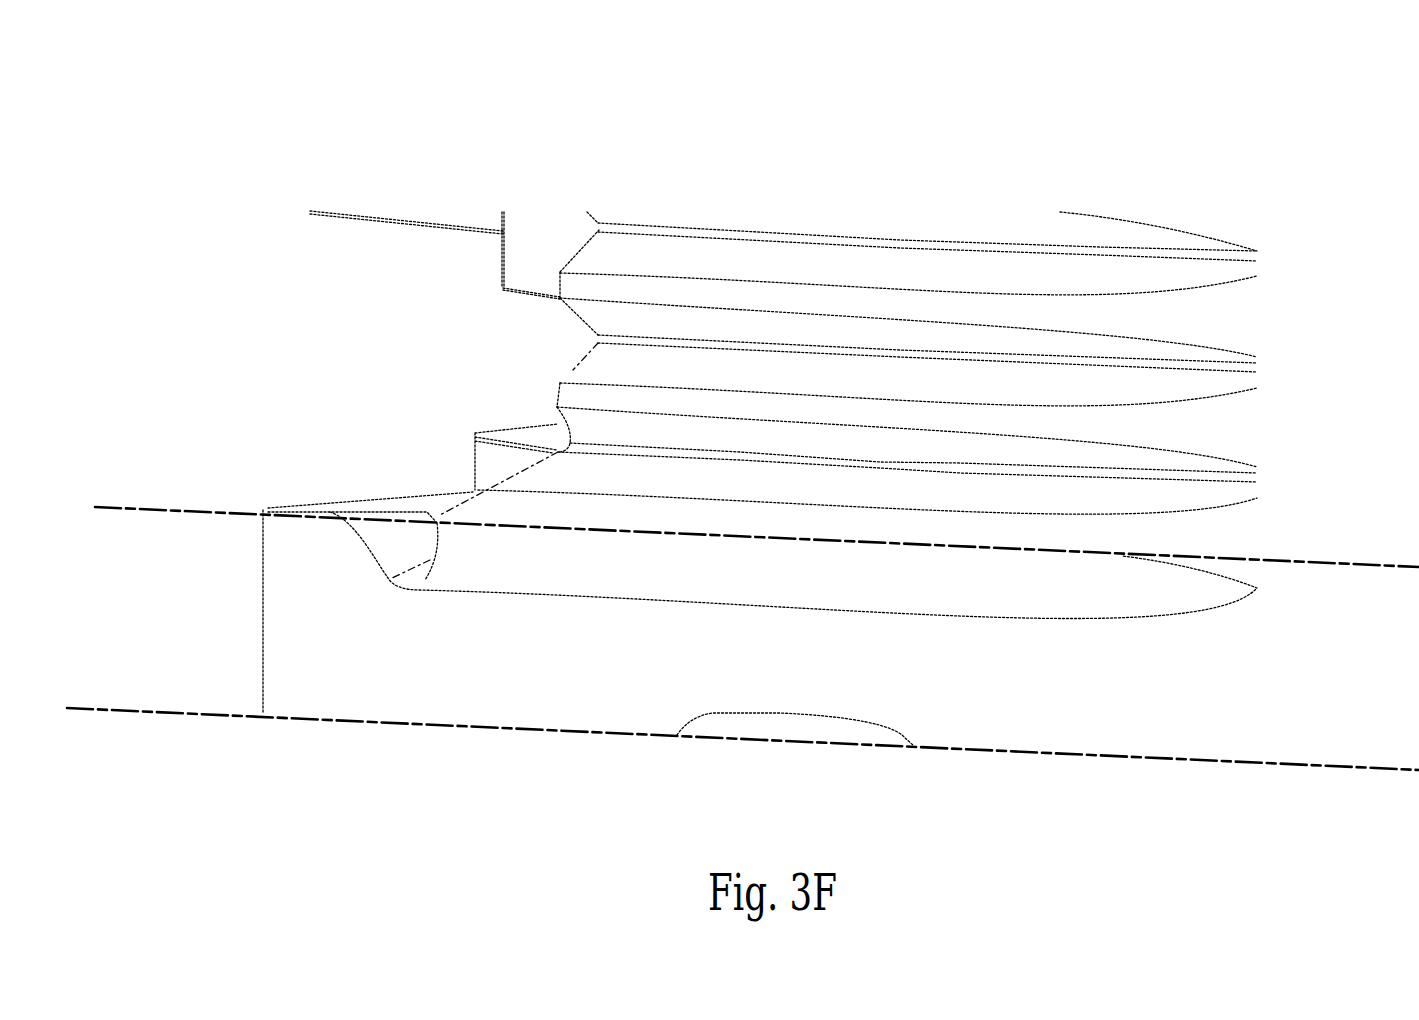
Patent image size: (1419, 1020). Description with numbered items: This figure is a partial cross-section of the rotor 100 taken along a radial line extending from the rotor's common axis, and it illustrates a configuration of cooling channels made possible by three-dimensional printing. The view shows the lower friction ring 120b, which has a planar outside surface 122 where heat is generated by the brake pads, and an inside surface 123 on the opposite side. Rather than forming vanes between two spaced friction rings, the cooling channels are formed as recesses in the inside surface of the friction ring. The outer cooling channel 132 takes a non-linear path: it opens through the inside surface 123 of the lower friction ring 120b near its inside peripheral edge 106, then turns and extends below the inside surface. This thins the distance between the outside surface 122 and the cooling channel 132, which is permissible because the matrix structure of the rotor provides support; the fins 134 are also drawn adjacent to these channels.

The rotor 100 is at (783, 271).
The inside peripheral edge 106 is at (249, 624).
The lower friction ring 120b is at (620, 685).
The planar outside surface 122 is at (616, 750).
The inside surface 123 is at (308, 507).
The outer cooling channel 132 is at (657, 583).
The fins 134 is at (602, 408).